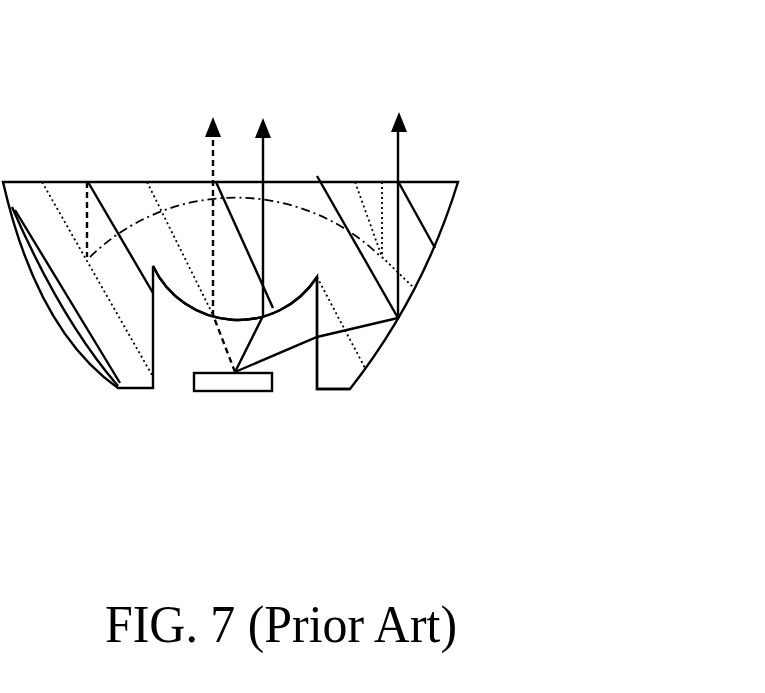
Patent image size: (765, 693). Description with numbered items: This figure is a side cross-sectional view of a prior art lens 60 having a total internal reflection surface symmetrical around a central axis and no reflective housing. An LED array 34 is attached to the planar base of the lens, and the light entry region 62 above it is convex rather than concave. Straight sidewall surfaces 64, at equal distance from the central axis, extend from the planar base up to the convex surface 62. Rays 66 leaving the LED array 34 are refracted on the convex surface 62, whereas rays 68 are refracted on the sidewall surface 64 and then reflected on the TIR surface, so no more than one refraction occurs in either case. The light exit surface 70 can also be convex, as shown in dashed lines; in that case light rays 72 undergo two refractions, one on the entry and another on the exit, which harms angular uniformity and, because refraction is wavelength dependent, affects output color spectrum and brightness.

The lens 60 is at (488, 217).
The light exit surface 70 is at (143, 230).
The light entry region 62 is at (193, 313).
The sidewall surfaces 64 is at (318, 362).
The LED array 34 is at (232, 391).
The rays 66 is at (267, 155).
The rays 68 is at (401, 157).
The light rays 72 is at (215, 155).